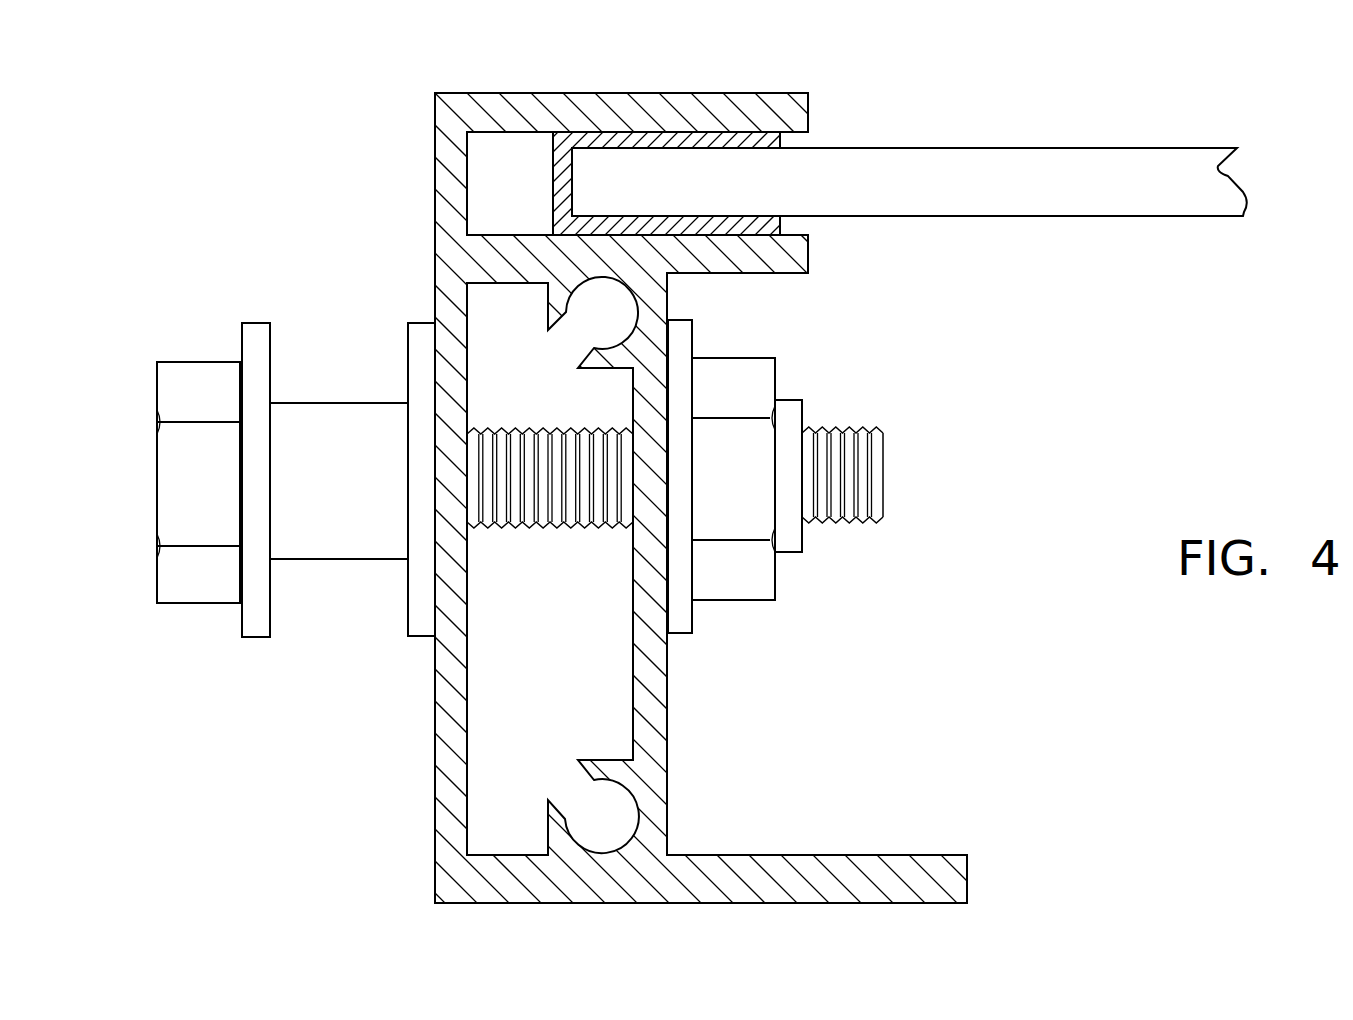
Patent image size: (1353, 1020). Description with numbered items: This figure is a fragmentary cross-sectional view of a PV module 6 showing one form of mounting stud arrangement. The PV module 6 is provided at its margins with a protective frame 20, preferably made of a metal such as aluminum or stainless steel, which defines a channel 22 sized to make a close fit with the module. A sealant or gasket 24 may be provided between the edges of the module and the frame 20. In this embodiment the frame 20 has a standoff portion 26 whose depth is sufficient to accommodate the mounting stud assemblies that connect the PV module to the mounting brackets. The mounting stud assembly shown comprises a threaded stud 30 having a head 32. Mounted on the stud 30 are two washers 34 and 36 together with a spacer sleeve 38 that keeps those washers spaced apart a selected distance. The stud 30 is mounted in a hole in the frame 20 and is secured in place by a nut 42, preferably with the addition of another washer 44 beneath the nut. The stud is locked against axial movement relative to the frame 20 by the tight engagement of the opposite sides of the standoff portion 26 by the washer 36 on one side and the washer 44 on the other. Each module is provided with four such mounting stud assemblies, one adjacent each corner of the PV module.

The PV module 6 is at (955, 142).
The protective frame 20 is at (400, 180).
The channel 22 is at (510, 182).
The sealant or gasket 24 is at (678, 125).
The standoff portion 26 is at (437, 798).
The threaded stud 30 is at (883, 472).
The head 32 is at (148, 471).
The washer 34 is at (242, 628).
The washer 36 is at (407, 617).
The spacer sleeve 38 is at (358, 402).
The nut 42 is at (735, 603).
The washer 44 is at (690, 320).